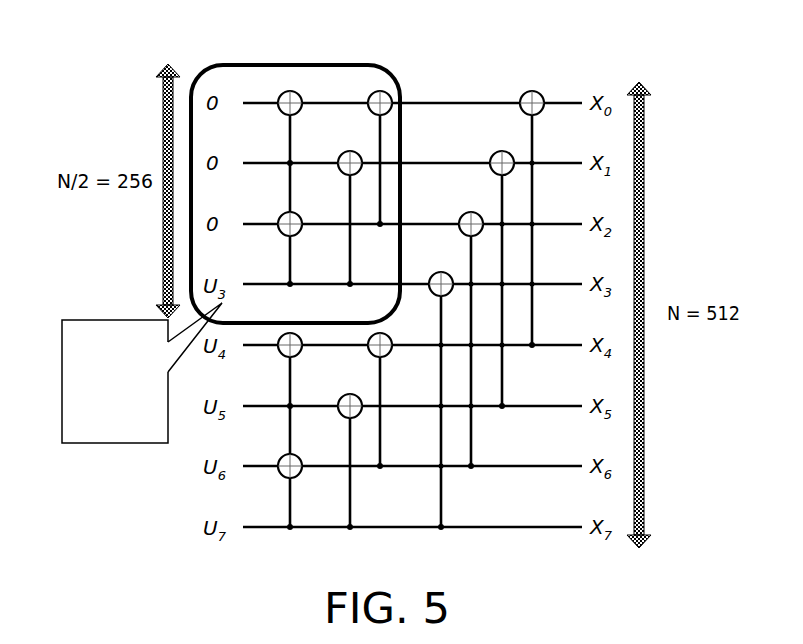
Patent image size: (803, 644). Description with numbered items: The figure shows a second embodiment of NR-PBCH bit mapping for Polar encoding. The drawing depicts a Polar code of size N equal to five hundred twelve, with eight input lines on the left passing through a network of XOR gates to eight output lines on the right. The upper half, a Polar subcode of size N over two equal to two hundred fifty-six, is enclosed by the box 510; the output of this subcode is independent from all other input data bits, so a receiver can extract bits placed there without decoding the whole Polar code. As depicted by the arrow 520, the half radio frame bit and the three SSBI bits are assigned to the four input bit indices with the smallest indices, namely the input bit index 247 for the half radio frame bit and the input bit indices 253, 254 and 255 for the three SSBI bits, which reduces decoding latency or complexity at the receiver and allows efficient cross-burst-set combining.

The box 510 is at (331, 316).
The arrow 520 is at (142, 396).
The input bit index 247 is at (118, 349).
The input bit index 253 is at (118, 374).
The input bit index 254 is at (118, 399).
The input bit index 255 is at (118, 424).